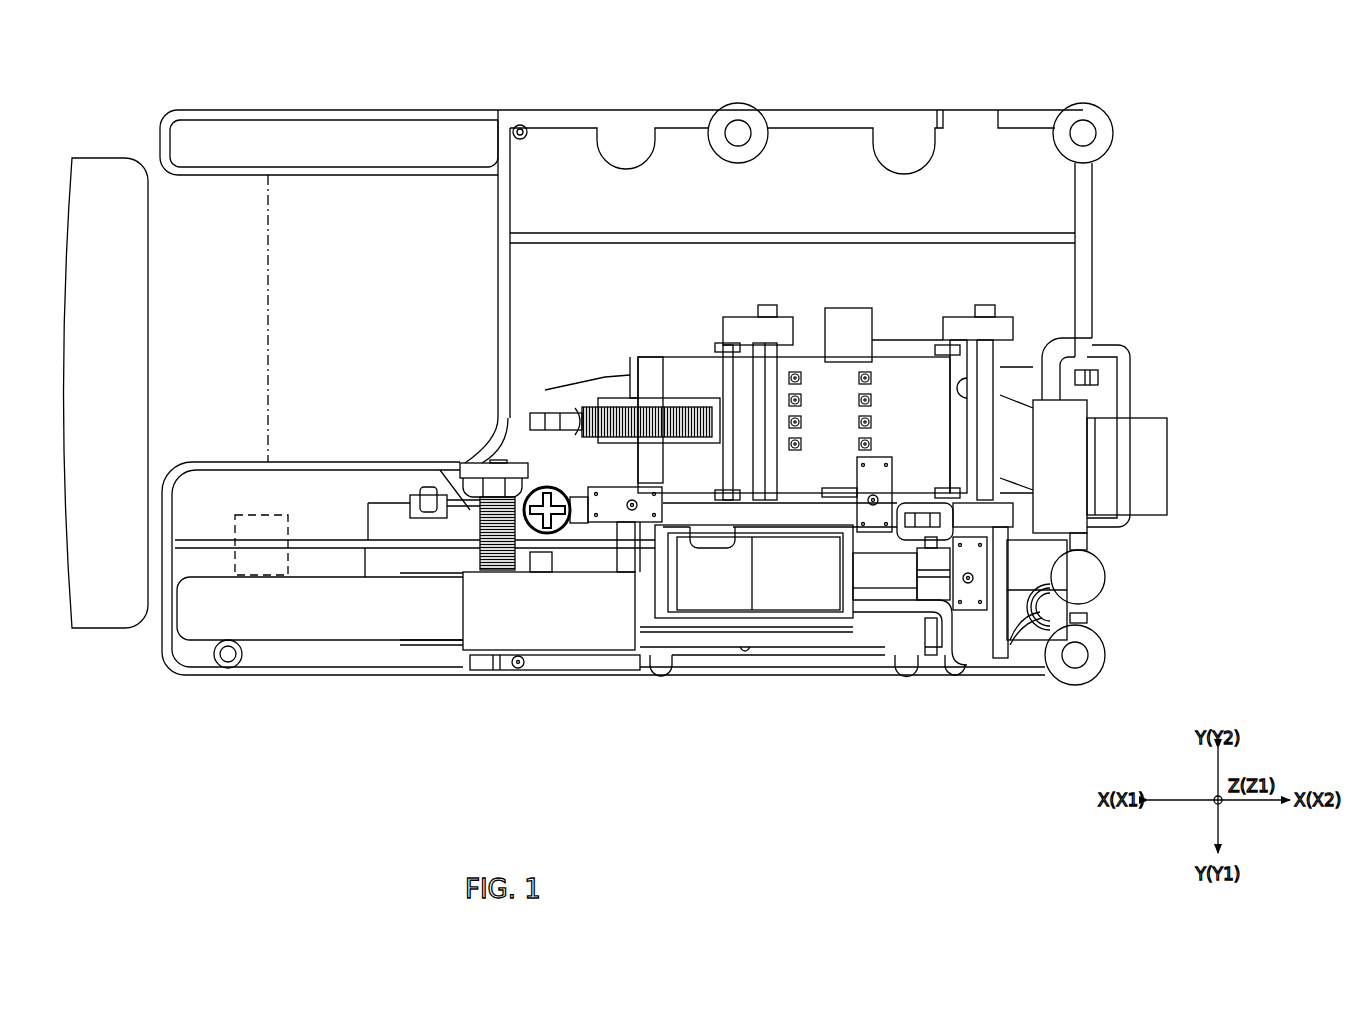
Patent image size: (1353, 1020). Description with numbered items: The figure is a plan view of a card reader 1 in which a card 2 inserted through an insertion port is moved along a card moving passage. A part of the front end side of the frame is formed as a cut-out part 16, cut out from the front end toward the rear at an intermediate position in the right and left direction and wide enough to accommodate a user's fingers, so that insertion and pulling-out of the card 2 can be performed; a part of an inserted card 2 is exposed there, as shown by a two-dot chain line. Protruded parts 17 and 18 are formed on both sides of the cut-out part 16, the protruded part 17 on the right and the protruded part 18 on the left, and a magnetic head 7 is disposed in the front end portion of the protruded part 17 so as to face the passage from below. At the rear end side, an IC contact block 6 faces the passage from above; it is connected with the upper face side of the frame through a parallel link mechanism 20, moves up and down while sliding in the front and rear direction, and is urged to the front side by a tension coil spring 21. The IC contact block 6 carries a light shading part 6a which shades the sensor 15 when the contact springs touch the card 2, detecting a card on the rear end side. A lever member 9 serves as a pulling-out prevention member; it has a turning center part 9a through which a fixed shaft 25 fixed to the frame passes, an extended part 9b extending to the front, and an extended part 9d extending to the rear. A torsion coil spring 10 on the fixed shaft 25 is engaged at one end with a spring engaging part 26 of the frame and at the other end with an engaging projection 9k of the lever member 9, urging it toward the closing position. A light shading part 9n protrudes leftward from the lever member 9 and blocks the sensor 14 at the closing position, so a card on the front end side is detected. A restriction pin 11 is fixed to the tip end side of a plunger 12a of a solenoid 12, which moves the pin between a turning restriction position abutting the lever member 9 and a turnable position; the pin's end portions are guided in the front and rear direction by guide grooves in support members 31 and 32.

The card reader 1 is at (1198, 72).
The card 2 is at (97, 158).
The IC contact block 6 is at (905, 357).
The light shading part 6a is at (840, 488).
The magnetic head 7 is at (250, 515).
The lever member 9 is at (567, 650).
The turning center part 9a is at (555, 662).
The extended part 9b is at (290, 640).
The extended part 9d is at (913, 650).
The engaging projection 9k is at (555, 560).
The light shading part 9n is at (617, 555).
The torsion coil spring 10 is at (475, 512).
The restriction pin 11 is at (930, 657).
The solenoid 12 is at (773, 610).
The plunger 12a is at (877, 590).
The sensor 14 is at (632, 460).
The sensor 15 is at (882, 457).
The cut-out part 16 is at (234, 227).
The protruded part 17 is at (365, 677).
The protruded part 18 is at (333, 110).
The parallel link mechanism 20 is at (1022, 302).
The tension coil spring 21 is at (585, 375).
The fixed shaft 25 is at (473, 465).
The spring engaging part 26 is at (430, 487).
The support member 31 is at (898, 628).
The support member 32 is at (910, 513).